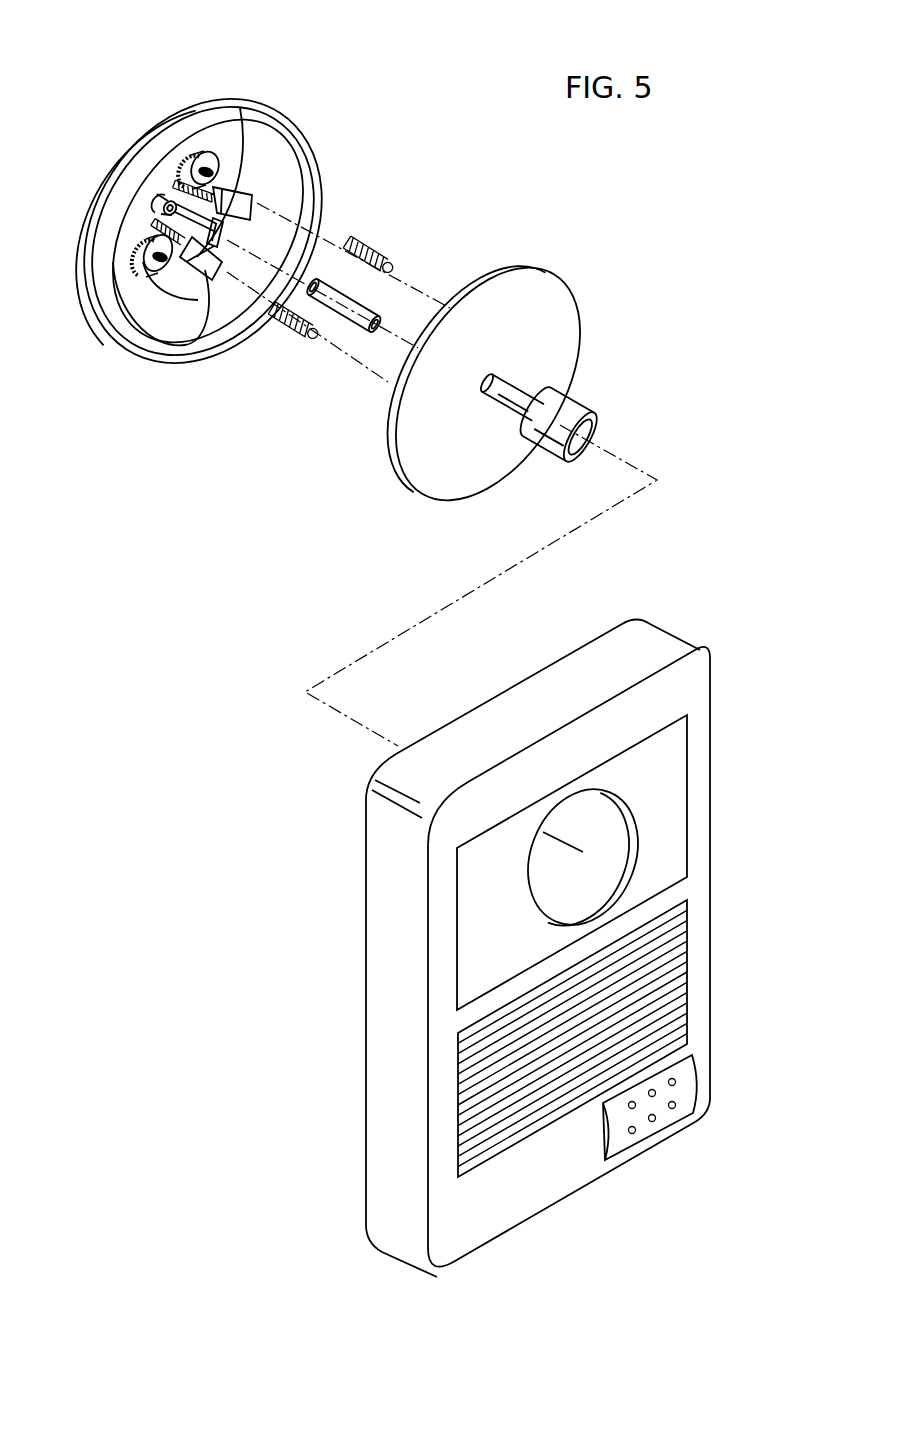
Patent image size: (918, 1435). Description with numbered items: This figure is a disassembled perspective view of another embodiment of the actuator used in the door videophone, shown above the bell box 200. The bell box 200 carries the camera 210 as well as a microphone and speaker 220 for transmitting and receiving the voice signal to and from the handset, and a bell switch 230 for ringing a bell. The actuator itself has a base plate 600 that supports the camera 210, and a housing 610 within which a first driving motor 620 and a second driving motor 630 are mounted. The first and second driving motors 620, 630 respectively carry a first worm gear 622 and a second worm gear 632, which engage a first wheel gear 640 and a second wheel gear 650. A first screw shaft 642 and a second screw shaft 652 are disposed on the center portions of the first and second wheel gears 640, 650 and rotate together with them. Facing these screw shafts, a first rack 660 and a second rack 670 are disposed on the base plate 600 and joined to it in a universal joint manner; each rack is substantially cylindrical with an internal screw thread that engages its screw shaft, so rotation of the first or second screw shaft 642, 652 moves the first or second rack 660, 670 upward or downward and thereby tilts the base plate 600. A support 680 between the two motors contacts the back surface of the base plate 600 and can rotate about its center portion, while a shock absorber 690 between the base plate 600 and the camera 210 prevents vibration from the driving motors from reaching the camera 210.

The bell box 200 is at (677, 632).
The camera 210 is at (577, 407).
The microphone and speaker 220 is at (683, 967).
The bell switch 230 is at (692, 1082).
The base plate 600 is at (543, 293).
The housing 610 is at (313, 155).
The first driving motor 620 is at (247, 202).
The first worm gear 622 is at (176, 186).
The second driving motor 630 is at (205, 282).
The second worm gear 632 is at (154, 206).
The first wheel gear 640 is at (208, 170).
The first screw shaft 642 is at (250, 128).
The second wheel gear 650 is at (156, 258).
The second screw shaft 652 is at (128, 312).
The first rack 660 is at (372, 253).
The second rack 670 is at (282, 332).
The support 680 is at (353, 317).
The shock absorber 690 is at (513, 400).